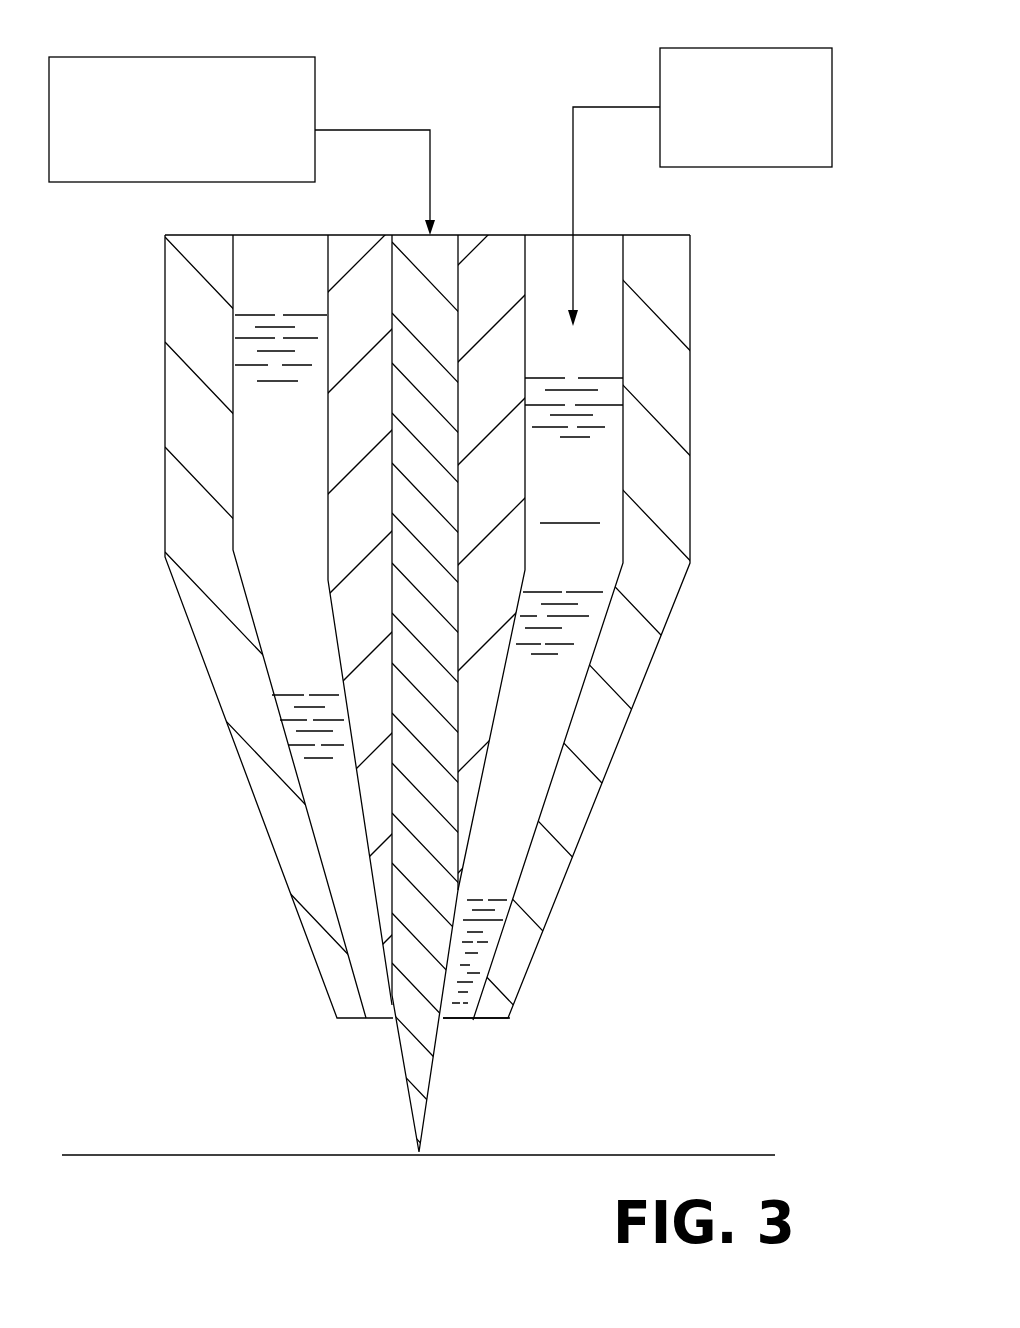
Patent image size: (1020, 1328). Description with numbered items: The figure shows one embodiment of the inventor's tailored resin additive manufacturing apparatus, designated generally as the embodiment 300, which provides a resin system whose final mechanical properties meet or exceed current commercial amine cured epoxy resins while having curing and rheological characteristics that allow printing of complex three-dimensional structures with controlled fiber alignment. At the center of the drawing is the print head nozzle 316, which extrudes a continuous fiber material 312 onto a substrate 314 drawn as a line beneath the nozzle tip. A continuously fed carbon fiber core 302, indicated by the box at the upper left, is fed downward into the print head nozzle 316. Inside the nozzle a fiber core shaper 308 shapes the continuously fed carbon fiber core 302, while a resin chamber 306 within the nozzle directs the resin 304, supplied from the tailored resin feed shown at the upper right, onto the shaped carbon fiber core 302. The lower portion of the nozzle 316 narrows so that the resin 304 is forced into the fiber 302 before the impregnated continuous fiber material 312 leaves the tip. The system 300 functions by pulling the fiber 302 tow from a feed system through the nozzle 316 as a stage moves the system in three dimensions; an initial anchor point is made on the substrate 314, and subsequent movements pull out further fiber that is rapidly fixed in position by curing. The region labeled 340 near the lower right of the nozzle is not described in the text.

The embodiment 300 is at (520, 55).
The continuously fed carbon fiber core 302 is at (127, 187).
The resin 304 is at (770, 173).
The resin chamber 306 is at (429, 536).
The fiber core shaper 308 is at (323, 436).
The continuous fiber material 312 is at (430, 1100).
The substrate 314 is at (673, 1153).
The print head nozzle 316 is at (158, 787).
The resin coating region 340 is at (518, 991).